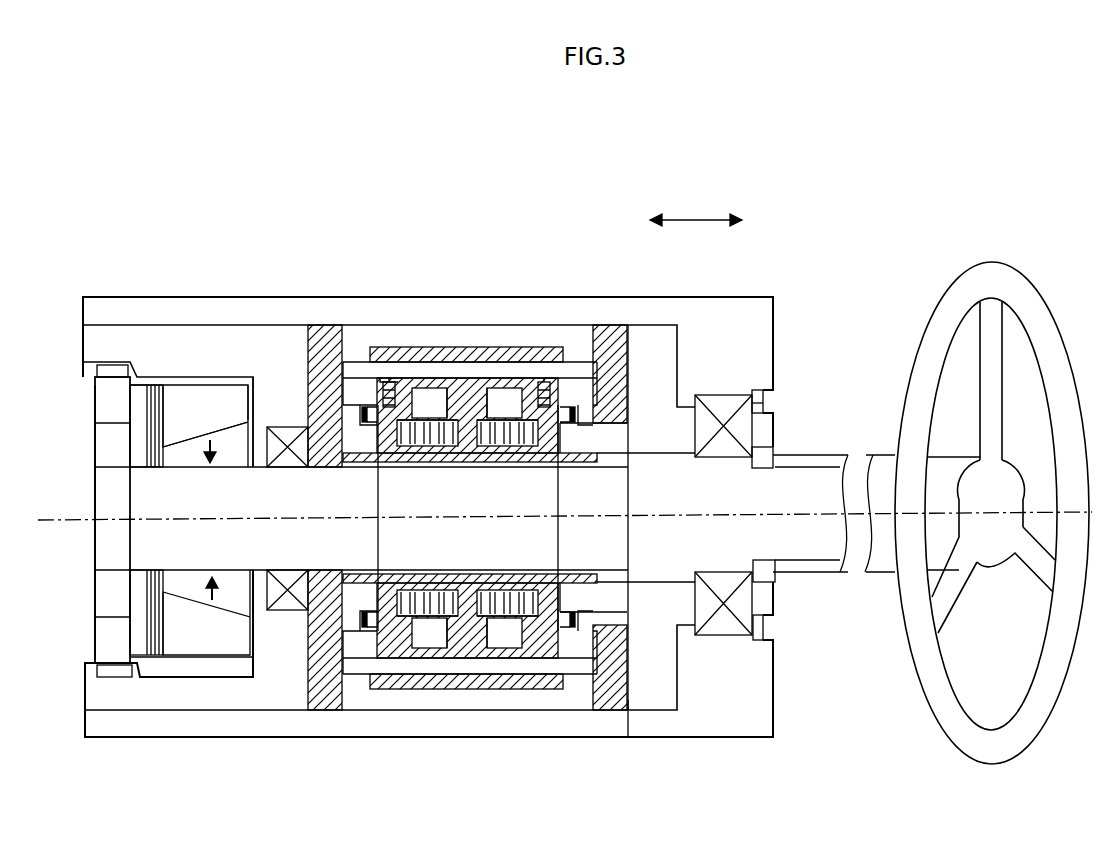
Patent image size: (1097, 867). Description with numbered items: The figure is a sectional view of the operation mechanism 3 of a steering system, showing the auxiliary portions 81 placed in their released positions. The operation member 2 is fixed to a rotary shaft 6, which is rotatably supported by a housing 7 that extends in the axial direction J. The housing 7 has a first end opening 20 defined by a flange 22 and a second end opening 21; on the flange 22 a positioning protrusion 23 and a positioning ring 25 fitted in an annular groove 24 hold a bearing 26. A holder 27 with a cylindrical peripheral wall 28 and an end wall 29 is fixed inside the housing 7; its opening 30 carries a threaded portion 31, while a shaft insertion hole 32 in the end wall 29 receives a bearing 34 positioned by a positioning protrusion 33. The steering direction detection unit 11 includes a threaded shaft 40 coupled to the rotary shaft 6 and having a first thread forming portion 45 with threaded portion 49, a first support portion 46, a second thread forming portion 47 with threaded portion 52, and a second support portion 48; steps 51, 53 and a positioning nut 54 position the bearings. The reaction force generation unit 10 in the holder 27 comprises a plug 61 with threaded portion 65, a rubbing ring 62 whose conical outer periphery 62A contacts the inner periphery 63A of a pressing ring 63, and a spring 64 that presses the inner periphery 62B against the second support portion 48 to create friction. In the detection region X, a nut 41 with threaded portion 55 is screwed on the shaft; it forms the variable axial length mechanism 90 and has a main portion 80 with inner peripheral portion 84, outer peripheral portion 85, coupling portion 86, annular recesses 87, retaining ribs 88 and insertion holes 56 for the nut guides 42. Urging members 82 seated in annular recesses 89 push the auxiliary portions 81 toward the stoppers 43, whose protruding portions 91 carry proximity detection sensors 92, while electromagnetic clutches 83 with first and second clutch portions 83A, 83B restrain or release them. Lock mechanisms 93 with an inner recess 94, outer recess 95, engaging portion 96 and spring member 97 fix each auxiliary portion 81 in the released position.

The operation member 2 is at (992, 748).
The operation mechanism 3 is at (800, 260).
The rotary shaft 6 is at (887, 577).
The housing 7 is at (630, 740).
The reaction force generation unit 10 is at (192, 347).
The steering direction detection unit 11 is at (515, 695).
The first end opening 20 is at (718, 692).
The second end opening 21 is at (83, 703).
The flange 22 is at (758, 328).
The positioning protrusion 23 is at (688, 398).
The annular groove 24 is at (757, 391).
The positioning ring 25 is at (763, 407).
The bearing 26 is at (717, 396).
The holder 27 is at (153, 385).
The cylindrical peripheral wall 28 is at (158, 360).
The end wall 29 is at (255, 390).
The opening 30 is at (92, 385).
The threaded portion 31 is at (113, 677).
The shaft insertion hole 32 is at (292, 610).
The positioning protrusion 33 is at (258, 592).
The bearing 34 is at (287, 437).
The threaded shaft 40 is at (727, 636).
The nut 41 is at (475, 683).
The nut guide 42 is at (505, 347).
The stopper 43 is at (323, 357).
The first thread forming portion 45 is at (820, 548).
The first support portion 46 is at (722, 548).
The second thread forming portion 47 is at (330, 712).
The second support portion 48 is at (123, 537).
The threaded portion 49 is at (810, 565).
The step 51 is at (697, 462).
The threaded portion 52 is at (565, 575).
The step 53 is at (322, 460).
The positioning nut 54 is at (760, 462).
The threaded portion 55 is at (485, 463).
The insertion hole 56 is at (468, 350).
The plug 61 is at (108, 397).
The rubbing ring 62 is at (240, 452).
The outer periphery 62A is at (197, 433).
The inner periphery 62B is at (212, 463).
The pressing ring 63 is at (200, 403).
The inner periphery 63A is at (227, 423).
The spring 64 is at (150, 380).
The threaded portion 65 is at (120, 668).
The main portion 80 is at (490, 362).
The auxiliary portion 81 is at (378, 445).
The urging member 82 is at (528, 442).
The electromagnetic clutch 83 is at (337, 818).
The first clutch portion 83A is at (458, 612).
The second clutch portion 83B is at (457, 612).
The inner peripheral portion 84 is at (467, 447).
The outer peripheral portion 85 is at (553, 350).
The coupling portion 86 is at (445, 378).
The annular recess 87 is at (450, 430).
The retaining rib 88 is at (567, 375).
The annular recess 89 is at (405, 595).
The variable axial length mechanism 90 is at (452, 650).
The protruding portion 91 is at (583, 412).
The proximity detection sensor 92 is at (364, 422).
The lock mechanism 93 is at (390, 382).
The inner recess 94 is at (398, 390).
The outer recess 95 is at (383, 380).
The engaging portion 96 is at (395, 398).
The spring member 97 is at (352, 400).
The axial direction J is at (697, 220).
The detection region X is at (538, 695).